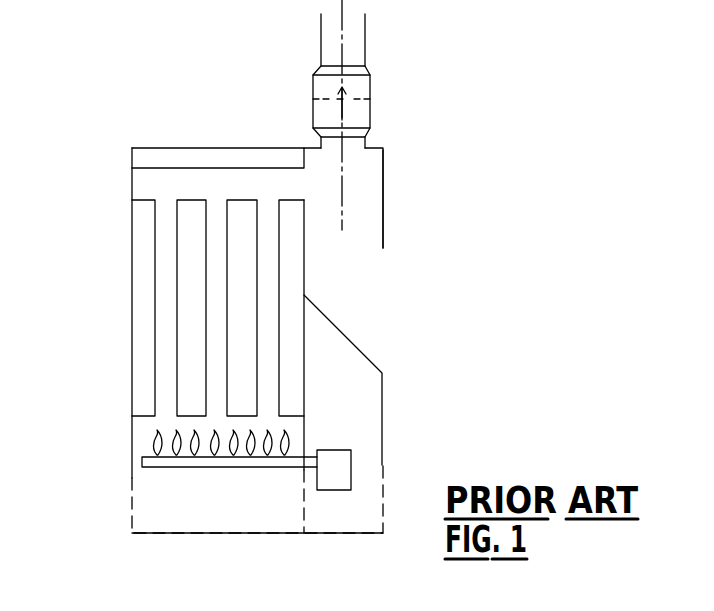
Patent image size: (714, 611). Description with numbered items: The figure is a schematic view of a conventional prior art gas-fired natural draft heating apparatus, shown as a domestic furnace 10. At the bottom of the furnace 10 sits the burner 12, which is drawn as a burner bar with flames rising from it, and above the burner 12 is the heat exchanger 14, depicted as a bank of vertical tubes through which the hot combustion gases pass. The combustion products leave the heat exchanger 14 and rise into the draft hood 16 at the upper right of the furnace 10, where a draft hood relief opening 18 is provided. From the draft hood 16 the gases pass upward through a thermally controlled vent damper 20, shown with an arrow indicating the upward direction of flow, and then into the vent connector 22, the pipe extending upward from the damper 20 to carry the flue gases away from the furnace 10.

The domestic furnace 10 is at (412, 175).
The burner 12 is at (343, 467).
The heat exchanger 14 is at (136, 260).
The draft hood 16 is at (383, 212).
The draft hood relief opening 18 is at (389, 308).
The thermally controlled vent damper 20 is at (378, 105).
The vent connector 22 is at (365, 40).